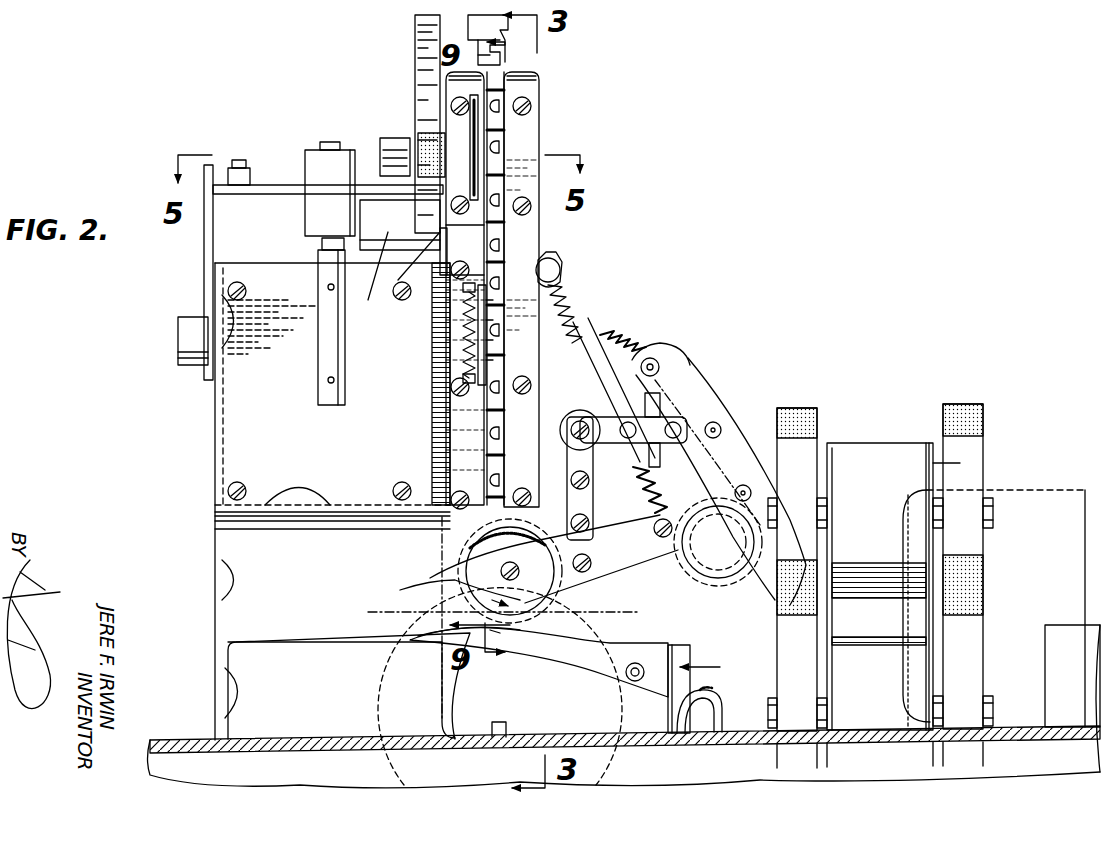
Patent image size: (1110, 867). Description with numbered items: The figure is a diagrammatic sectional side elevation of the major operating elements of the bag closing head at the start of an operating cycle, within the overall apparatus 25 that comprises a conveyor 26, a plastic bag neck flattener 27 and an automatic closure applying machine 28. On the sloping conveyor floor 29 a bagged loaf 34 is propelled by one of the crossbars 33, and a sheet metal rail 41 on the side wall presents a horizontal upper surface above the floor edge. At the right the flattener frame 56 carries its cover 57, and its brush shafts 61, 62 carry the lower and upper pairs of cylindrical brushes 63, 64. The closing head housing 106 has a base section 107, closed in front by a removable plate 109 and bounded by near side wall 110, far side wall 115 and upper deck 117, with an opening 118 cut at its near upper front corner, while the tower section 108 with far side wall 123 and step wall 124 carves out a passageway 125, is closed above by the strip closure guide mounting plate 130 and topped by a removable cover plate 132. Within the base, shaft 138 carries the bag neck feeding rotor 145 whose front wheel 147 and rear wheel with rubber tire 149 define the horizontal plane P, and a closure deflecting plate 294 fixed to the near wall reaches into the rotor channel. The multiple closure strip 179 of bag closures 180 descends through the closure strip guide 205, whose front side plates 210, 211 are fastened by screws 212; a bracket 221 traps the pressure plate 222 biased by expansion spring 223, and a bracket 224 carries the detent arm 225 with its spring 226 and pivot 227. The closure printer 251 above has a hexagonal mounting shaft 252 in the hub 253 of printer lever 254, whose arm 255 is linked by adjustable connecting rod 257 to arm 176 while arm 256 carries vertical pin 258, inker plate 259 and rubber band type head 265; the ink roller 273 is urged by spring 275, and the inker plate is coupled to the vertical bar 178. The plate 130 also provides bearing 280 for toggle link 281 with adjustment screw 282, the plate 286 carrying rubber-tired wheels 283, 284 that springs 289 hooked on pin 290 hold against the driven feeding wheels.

The apparatus 25 is at (722, 328).
The conveyor 26 is at (213, 738).
The plastic bag neck flattener 27 is at (898, 443).
The automatic closure applying machine 28 is at (565, 252).
The conveyor floor 29 is at (272, 740).
The crossbars 33 is at (704, 690).
The bagged loaf 34 is at (442, 540).
The sheet metal rail 41 is at (1085, 630).
The flattener frame 56 is at (960, 463).
The flattener frame cover 57 is at (842, 443).
The brush shaft 61 is at (940, 700).
The brush shaft 62 is at (940, 510).
The brushes 63 is at (780, 640).
The brushes 64 is at (778, 410).
The housing 106 is at (215, 496).
The base section 107 is at (678, 622).
The tower section 108 is at (214, 390).
The removable plate 109 is at (349, 686).
The near side wall 110 is at (672, 648).
The far side wall 115 is at (225, 690).
The horizontal upper deck 117 is at (668, 640).
The opening 118 is at (700, 630).
The far side wall 123 is at (220, 430).
The step wall 124 is at (305, 505).
The passageway 125 is at (330, 570).
The strip closure guide mounting plate 130 is at (332, 501).
The removable cover plate 132 is at (270, 262).
The shaft 138 is at (490, 757).
The bag neck feeding rotor 145 is at (625, 757).
The front wheel 147 is at (590, 640).
The rubber tire 149 is at (430, 636).
The arm 176 is at (205, 249).
The vertical bar 178 is at (415, 52).
The multiple closure strip 179 is at (515, 50).
The bag closures 180 is at (498, 160).
The closure strip guide 205 is at (538, 82).
The front side plate 210 is at (528, 235).
The front side plate 211 is at (444, 262).
The screws 212 is at (455, 100).
The bracket 221 is at (465, 249).
The pressure plate 222 is at (470, 130).
The expansion spring 223 is at (490, 158).
The bracket 224 is at (465, 340).
The detent arm 225 is at (500, 352).
The spring 226 is at (463, 305).
The pivot 227 is at (558, 300).
The closure printer 251 is at (378, 138).
The hexagonal mounting shaft 252 is at (330, 362).
The hub 253 is at (318, 150).
The printer lever 254 is at (318, 192).
The arm 255 is at (278, 195).
The arm 256 is at (368, 266).
The adjustable connecting rod 257 is at (262, 172).
The vertical pin 258 is at (380, 182).
The inker plate 259 is at (388, 197).
The rubber band type head 265 is at (380, 145).
The ink roller 273 is at (430, 135).
The spring 275 is at (415, 256).
The bearing 280 is at (585, 415).
The toggle link 281 is at (572, 476).
The adjustment screw 282 is at (655, 455).
The wheel 283 is at (485, 552).
The wheel 284 is at (455, 540).
The plate 286 is at (420, 583).
The springs 289 is at (578, 322).
The pin 290 is at (560, 265).
The closure deflecting plate 294 is at (600, 643).
The horizontal plane P is at (368, 612).